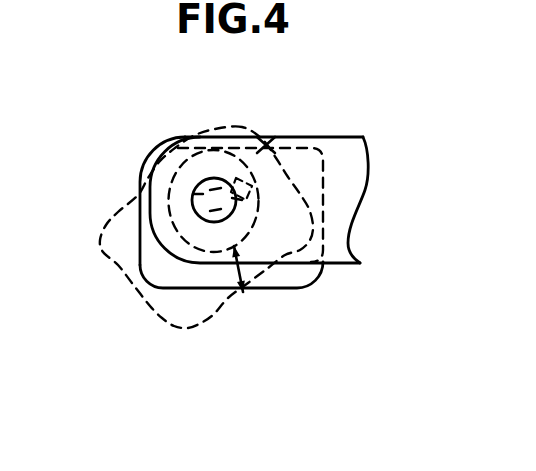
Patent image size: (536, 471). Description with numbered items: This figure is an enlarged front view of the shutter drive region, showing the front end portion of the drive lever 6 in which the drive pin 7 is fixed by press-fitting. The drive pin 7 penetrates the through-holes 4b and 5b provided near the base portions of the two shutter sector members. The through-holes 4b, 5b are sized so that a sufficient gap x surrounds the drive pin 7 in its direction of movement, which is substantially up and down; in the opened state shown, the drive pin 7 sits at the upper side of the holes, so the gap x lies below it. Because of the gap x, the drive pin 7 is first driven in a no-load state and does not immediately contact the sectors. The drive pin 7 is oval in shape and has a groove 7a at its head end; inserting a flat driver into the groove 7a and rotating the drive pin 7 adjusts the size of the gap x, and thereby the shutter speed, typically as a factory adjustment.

The drive lever 6 is at (338, 164).
The through-hole 4b is at (281, 288).
The drive pin 7 is at (140, 173).
The groove 7a is at (268, 142).
The through-hole 5b is at (116, 270).
The gap x is at (243, 292).